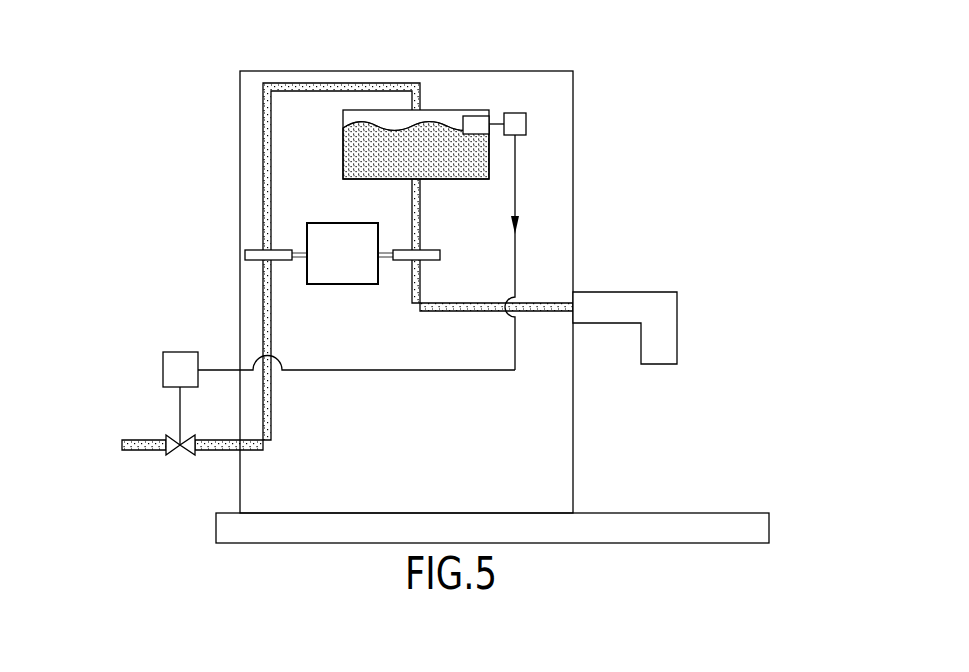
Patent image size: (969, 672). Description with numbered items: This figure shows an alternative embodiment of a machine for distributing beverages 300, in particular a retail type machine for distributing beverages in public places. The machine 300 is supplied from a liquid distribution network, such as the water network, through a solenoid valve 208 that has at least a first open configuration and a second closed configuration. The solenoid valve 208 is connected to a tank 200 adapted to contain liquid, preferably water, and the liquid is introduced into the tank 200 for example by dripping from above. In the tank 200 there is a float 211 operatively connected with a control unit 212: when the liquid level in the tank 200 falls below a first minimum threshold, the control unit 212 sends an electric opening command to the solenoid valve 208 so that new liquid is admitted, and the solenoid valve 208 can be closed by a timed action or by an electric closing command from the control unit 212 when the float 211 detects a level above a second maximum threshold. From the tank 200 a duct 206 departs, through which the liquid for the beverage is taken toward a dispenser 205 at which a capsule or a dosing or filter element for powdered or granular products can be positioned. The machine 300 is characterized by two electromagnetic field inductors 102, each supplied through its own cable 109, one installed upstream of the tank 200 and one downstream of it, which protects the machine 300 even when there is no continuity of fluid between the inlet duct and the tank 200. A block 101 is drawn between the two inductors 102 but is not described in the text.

The machine for distributing beverages 300 is at (333, 68).
The tank 200 is at (437, 165).
The float 211 is at (478, 116).
The control unit 212 is at (527, 124).
The fuel cell stack 101 is at (365, 268).
The cable 109 is at (298, 246).
The electromagnetic field inductor 102 is at (262, 256).
The dispenser 205 is at (643, 291).
The duct 206 is at (454, 330).
The solenoid valve 208 is at (185, 454).